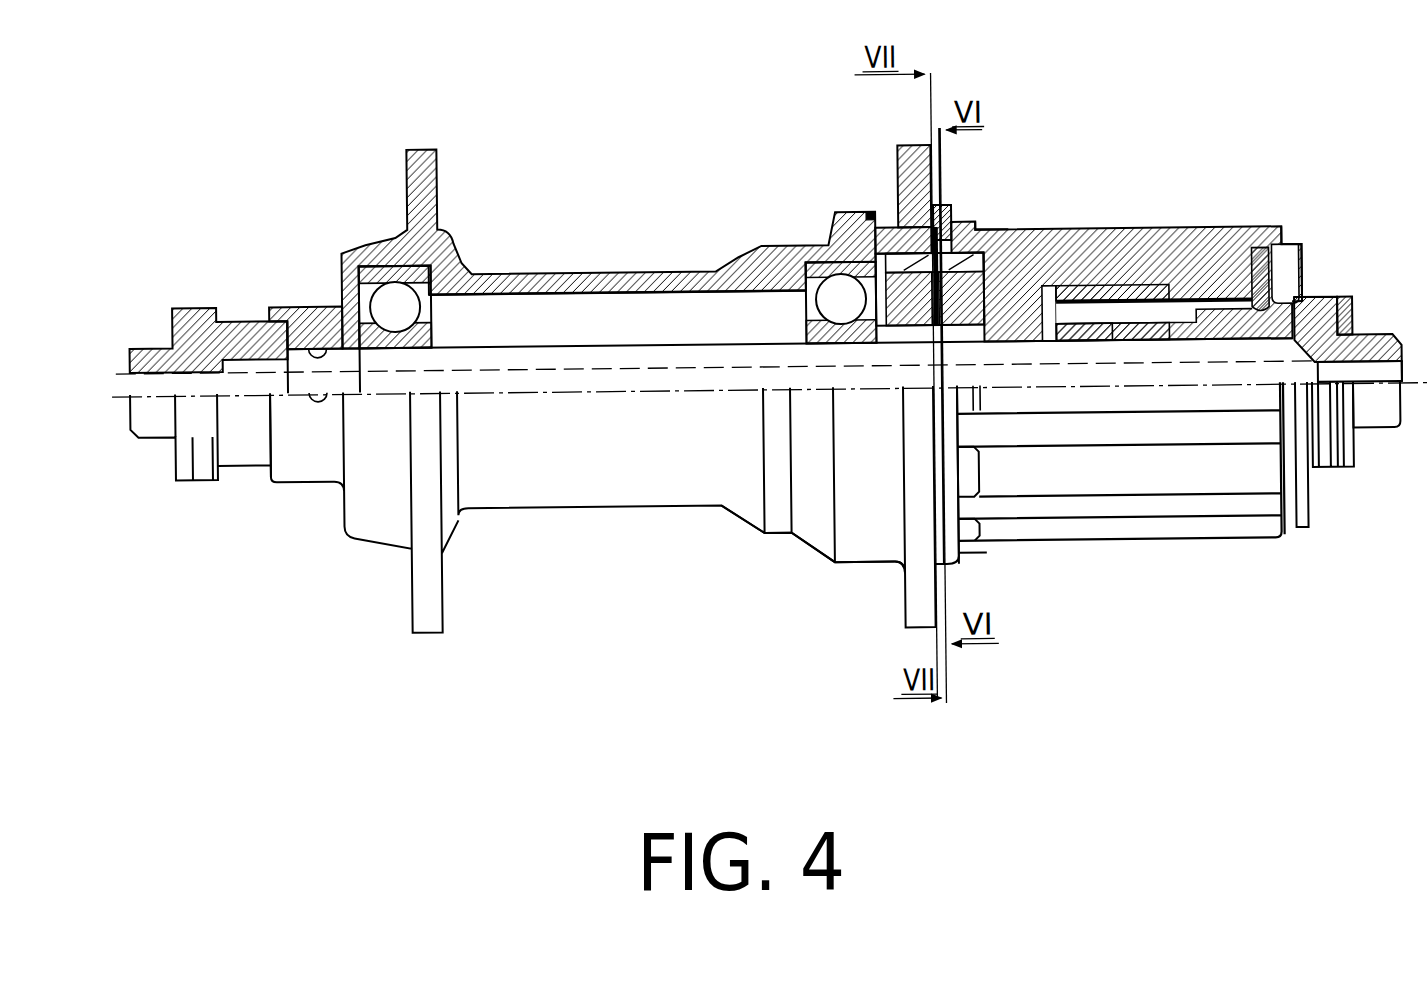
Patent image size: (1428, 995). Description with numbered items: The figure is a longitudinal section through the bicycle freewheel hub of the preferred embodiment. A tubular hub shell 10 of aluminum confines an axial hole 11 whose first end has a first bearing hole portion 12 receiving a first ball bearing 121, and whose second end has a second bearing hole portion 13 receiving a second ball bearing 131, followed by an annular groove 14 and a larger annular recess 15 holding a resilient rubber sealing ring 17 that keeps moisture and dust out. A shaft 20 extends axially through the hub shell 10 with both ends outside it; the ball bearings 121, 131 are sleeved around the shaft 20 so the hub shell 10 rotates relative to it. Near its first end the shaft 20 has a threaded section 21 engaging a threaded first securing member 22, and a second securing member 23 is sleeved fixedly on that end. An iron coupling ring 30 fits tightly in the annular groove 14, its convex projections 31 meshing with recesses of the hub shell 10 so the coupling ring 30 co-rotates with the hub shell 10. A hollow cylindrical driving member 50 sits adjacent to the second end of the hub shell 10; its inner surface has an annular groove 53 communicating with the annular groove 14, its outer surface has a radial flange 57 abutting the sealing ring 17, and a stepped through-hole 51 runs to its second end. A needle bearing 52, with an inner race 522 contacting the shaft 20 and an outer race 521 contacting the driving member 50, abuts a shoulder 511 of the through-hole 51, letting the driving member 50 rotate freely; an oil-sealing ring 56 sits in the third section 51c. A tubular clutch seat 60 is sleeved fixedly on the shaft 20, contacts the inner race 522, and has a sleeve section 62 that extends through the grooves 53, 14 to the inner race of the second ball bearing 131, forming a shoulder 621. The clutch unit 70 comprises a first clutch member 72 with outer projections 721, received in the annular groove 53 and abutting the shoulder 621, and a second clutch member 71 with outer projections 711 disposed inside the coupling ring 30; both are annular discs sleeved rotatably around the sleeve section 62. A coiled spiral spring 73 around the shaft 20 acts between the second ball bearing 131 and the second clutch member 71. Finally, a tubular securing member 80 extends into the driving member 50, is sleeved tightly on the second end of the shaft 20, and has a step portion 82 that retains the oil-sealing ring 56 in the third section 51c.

The tubular hub shell 10 is at (567, 266).
The axial hole 11 is at (632, 303).
The first bearing hole portion 12 is at (383, 238).
The first ball bearing 121 is at (375, 269).
The second bearing hole portion 13 is at (816, 246).
The second ball bearing 131 is at (817, 268).
The annular groove 14 is at (900, 220).
The annular recess 15 is at (958, 210).
The sealing ring 17 is at (980, 227).
The shaft 20 is at (503, 337).
The threaded section 21 is at (300, 338).
The first securing member 22 is at (322, 313).
The second securing member 23 is at (202, 314).
The coupling ring 30 is at (880, 228).
The projections 31 is at (1036, 189).
The driving member 50 is at (1167, 378).
The stepped through-hole 51 is at (1257, 246).
The shoulder 511 is at (1223, 303).
The third section 51c is at (1290, 252).
The needle bearing 52 is at (1145, 283).
The outer race 521 is at (1090, 345).
The inner race 522 is at (1128, 345).
The annular groove 53 is at (1049, 290).
The oil-sealing ring 56 is at (1266, 275).
The radial flange 57 is at (1003, 230).
The tubular clutch seat 60 is at (1027, 327).
The sleeve section 62 is at (885, 318).
The shoulder 621 is at (980, 314).
The clutch unit 70 is at (839, 513).
The second clutch member 71 is at (913, 318).
The projections 711 is at (1030, 233).
The first clutch member 72 is at (957, 318).
The projections 721 is at (1057, 232).
The coiled spiral spring 73 is at (788, 536).
The tubular securing member 80 is at (1356, 392).
The step portion 82 is at (1318, 302).